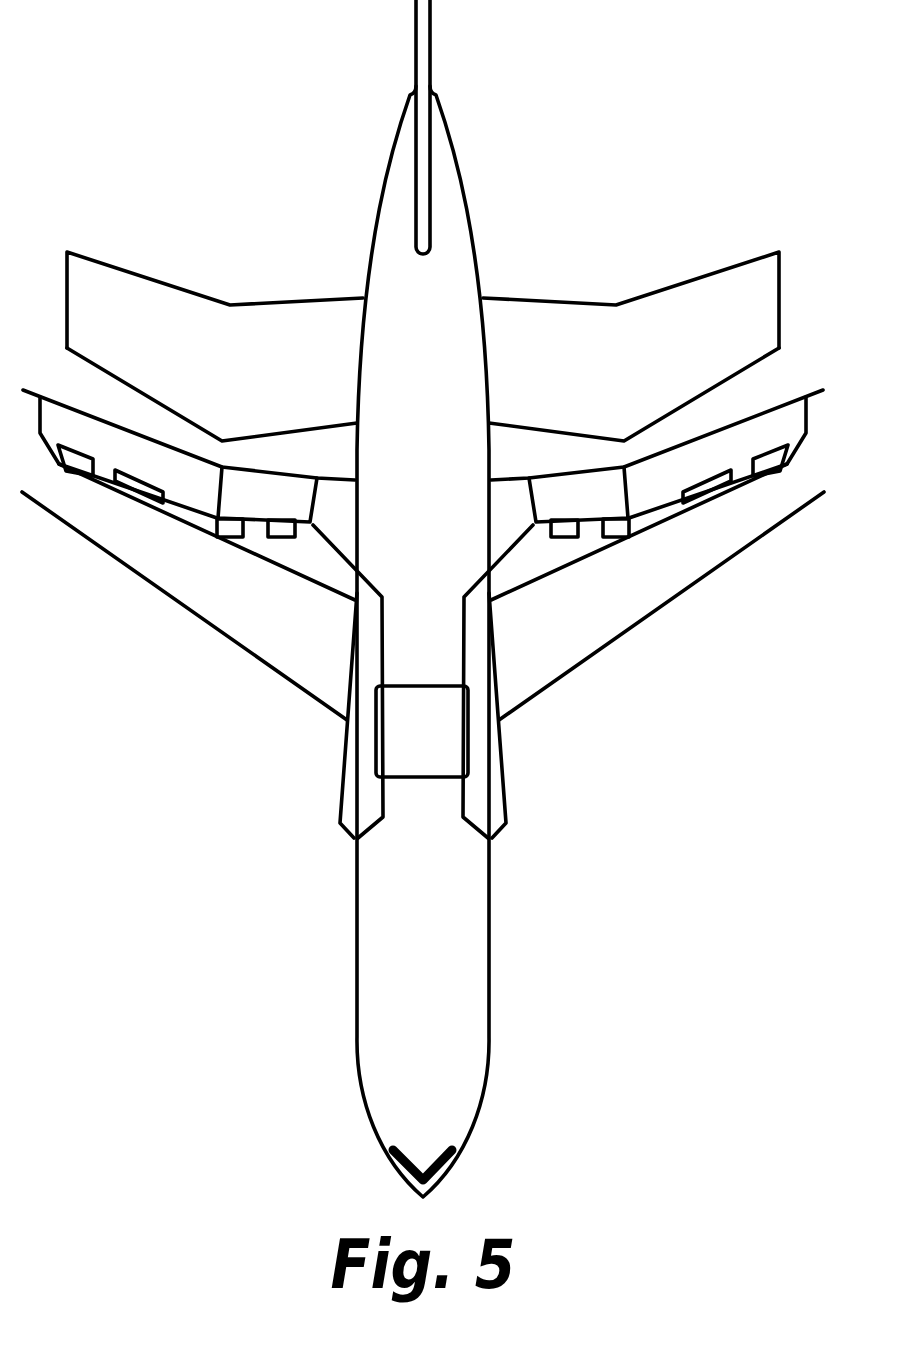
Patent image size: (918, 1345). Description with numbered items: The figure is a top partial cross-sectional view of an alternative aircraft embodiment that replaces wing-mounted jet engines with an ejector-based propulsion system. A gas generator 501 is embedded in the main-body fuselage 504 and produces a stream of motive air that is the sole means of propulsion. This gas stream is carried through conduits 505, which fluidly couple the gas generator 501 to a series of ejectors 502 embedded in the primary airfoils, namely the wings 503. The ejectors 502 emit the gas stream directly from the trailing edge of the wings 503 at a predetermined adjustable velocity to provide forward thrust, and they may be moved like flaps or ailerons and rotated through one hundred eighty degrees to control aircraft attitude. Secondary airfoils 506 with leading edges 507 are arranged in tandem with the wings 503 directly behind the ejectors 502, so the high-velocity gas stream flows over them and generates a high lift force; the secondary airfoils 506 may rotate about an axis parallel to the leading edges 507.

The gas generator 501 is at (405, 751).
The ejectors 502 is at (162, 481).
The wings 503 is at (237, 616).
The main-body fuselage 504 is at (405, 901).
The conduits 505 is at (330, 570).
The secondary airfoils 506 is at (237, 376).
The leading edges 507 is at (200, 422).